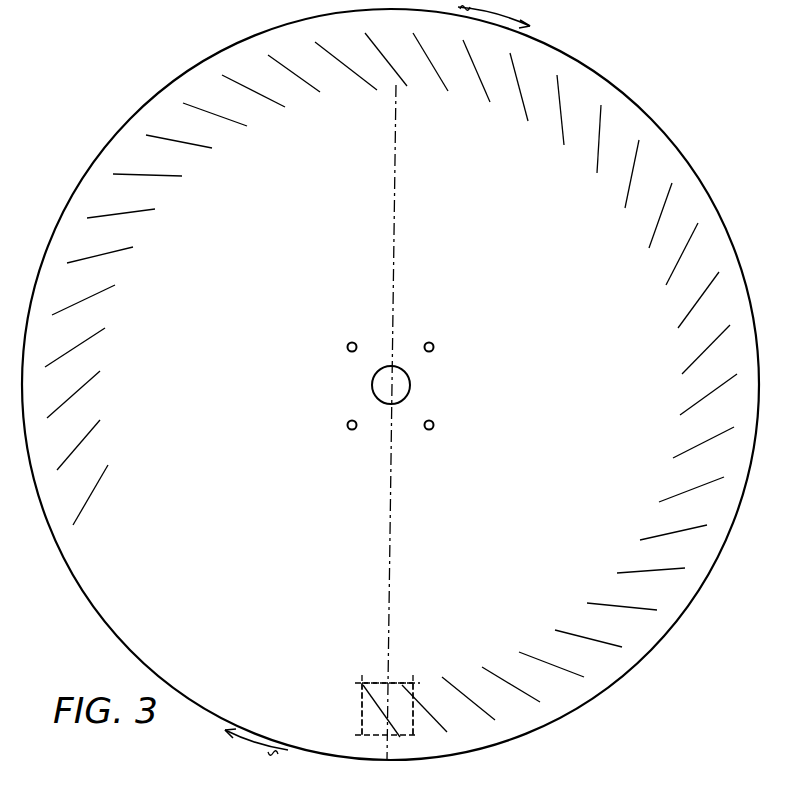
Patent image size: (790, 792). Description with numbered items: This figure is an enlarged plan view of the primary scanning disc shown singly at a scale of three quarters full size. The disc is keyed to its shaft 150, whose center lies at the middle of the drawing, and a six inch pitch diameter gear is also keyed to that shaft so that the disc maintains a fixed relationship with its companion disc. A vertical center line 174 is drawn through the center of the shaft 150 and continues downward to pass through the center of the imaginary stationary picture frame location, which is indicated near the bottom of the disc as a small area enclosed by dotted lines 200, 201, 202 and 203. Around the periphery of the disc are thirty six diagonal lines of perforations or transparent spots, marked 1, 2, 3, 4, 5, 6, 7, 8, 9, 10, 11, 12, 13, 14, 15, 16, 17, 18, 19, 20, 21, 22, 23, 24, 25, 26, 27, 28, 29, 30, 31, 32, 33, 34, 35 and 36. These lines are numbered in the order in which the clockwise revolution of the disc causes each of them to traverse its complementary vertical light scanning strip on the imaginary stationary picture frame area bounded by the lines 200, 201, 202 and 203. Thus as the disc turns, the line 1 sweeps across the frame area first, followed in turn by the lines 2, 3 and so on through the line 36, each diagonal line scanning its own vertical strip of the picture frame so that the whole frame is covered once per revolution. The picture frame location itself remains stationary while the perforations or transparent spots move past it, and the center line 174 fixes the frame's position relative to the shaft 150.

The diagonal line of perforations or transparent spots 1 is at (400, 721).
The diagonal line of perforations or transparent spots 2 is at (436, 726).
The diagonal line of perforations or transparent spots 3 is at (493, 708).
The diagonal line of perforations or transparent spots 4 is at (535, 680).
The diagonal line of perforations or transparent spots 5 is at (571, 657).
The diagonal line of perforations or transparent spots 6 is at (605, 630).
The diagonal line of perforations or transparent spots 7 is at (638, 598).
The diagonal line of perforations or transparent spots 8 is at (666, 562).
The diagonal line of perforations or transparent spots 9 is at (688, 522).
The diagonal line of perforations or transparent spots 10 is at (708, 474).
The diagonal line of perforations or transparent spots 11 is at (716, 430).
The diagonal line of perforations or transparent spots 12 is at (722, 387).
The diagonal line of perforations or transparent spots 13 is at (722, 341).
The diagonal line of perforations or transparent spots 14 is at (711, 287).
The diagonal line of perforations or transparent spots 15 is at (693, 240).
The diagonal line of perforations or transparent spots 16 is at (657, 194).
The diagonal line of perforations or transparent spots 17 is at (635, 157).
The diagonal line of perforations or transparent spots 18 is at (599, 118).
The diagonal line of perforations or transparent spots 19 is at (556, 89).
The diagonal line of perforations or transparent spots 20 is at (514, 68).
The diagonal line of perforations or transparent spots 21 is at (469, 55).
The diagonal line of perforations or transparent spots 22 is at (422, 48).
The diagonal line of perforations or transparent spots 23 is at (377, 51).
The diagonal line of perforations or transparent spots 24 is at (331, 58).
The diagonal line of perforations or transparent spots 25 is at (283, 70).
The diagonal line of perforations or transparent spots 26 is at (240, 88).
The diagonal line of perforations or transparent spots 27 is at (200, 114).
The diagonal line of perforations or transparent spots 28 is at (163, 142).
The diagonal line of perforations or transparent spots 29 is at (128, 178).
The diagonal line of perforations or transparent spots 30 is at (100, 218).
The diagonal line of perforations or transparent spots 31 is at (77, 262).
The diagonal line of perforations or transparent spots 32 is at (66, 310).
The diagonal line of perforations or transparent spots 33 is at (58, 360).
The diagonal line of perforations or transparent spots 34 is at (60, 408).
The diagonal line of perforations or transparent spots 35 is at (68, 460).
The diagonal line of perforations or transparent spots 36 is at (83, 510).
The shaft 150 is at (399, 385).
The vertical center line 174 is at (390, 561).
The dotted line of picture frame location 200 is at (361, 712).
The dotted line of picture frame location 201 is at (413, 722).
The dotted line of picture frame location 202 is at (378, 681).
The dotted line of picture frame location 203 is at (378, 734).